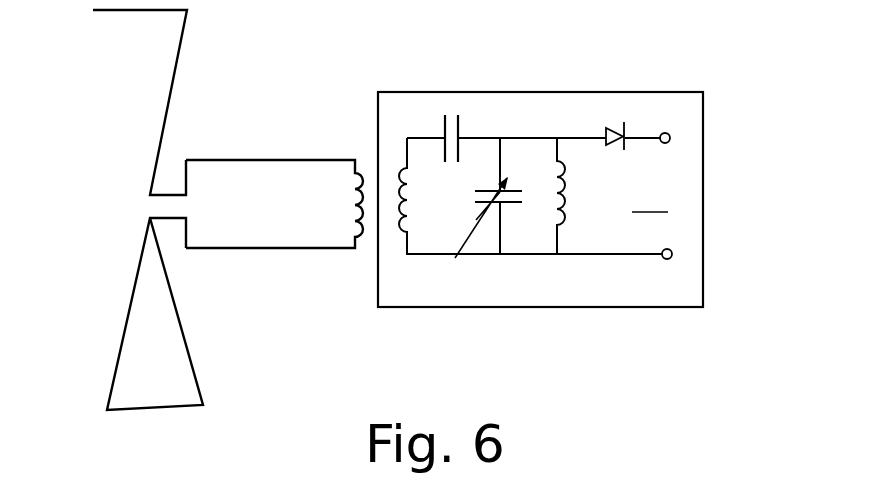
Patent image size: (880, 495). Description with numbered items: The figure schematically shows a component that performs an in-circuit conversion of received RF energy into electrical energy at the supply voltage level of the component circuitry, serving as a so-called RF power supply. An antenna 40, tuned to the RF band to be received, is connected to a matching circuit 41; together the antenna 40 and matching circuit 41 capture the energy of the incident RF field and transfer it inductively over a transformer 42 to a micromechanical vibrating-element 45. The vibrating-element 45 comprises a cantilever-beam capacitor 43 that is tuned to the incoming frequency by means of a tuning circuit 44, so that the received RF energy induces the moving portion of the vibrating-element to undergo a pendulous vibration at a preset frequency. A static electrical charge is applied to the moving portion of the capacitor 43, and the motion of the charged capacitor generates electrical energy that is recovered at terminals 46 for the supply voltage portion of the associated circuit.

The antenna 40 is at (137, 272).
The matching circuit 41 is at (305, 159).
The transformer 42 is at (380, 163).
The cantilever-beam capacitor 43 is at (458, 254).
The tuning circuit 44 is at (560, 155).
The vibrating-element 45 is at (650, 198).
The terminals 46 is at (671, 139).